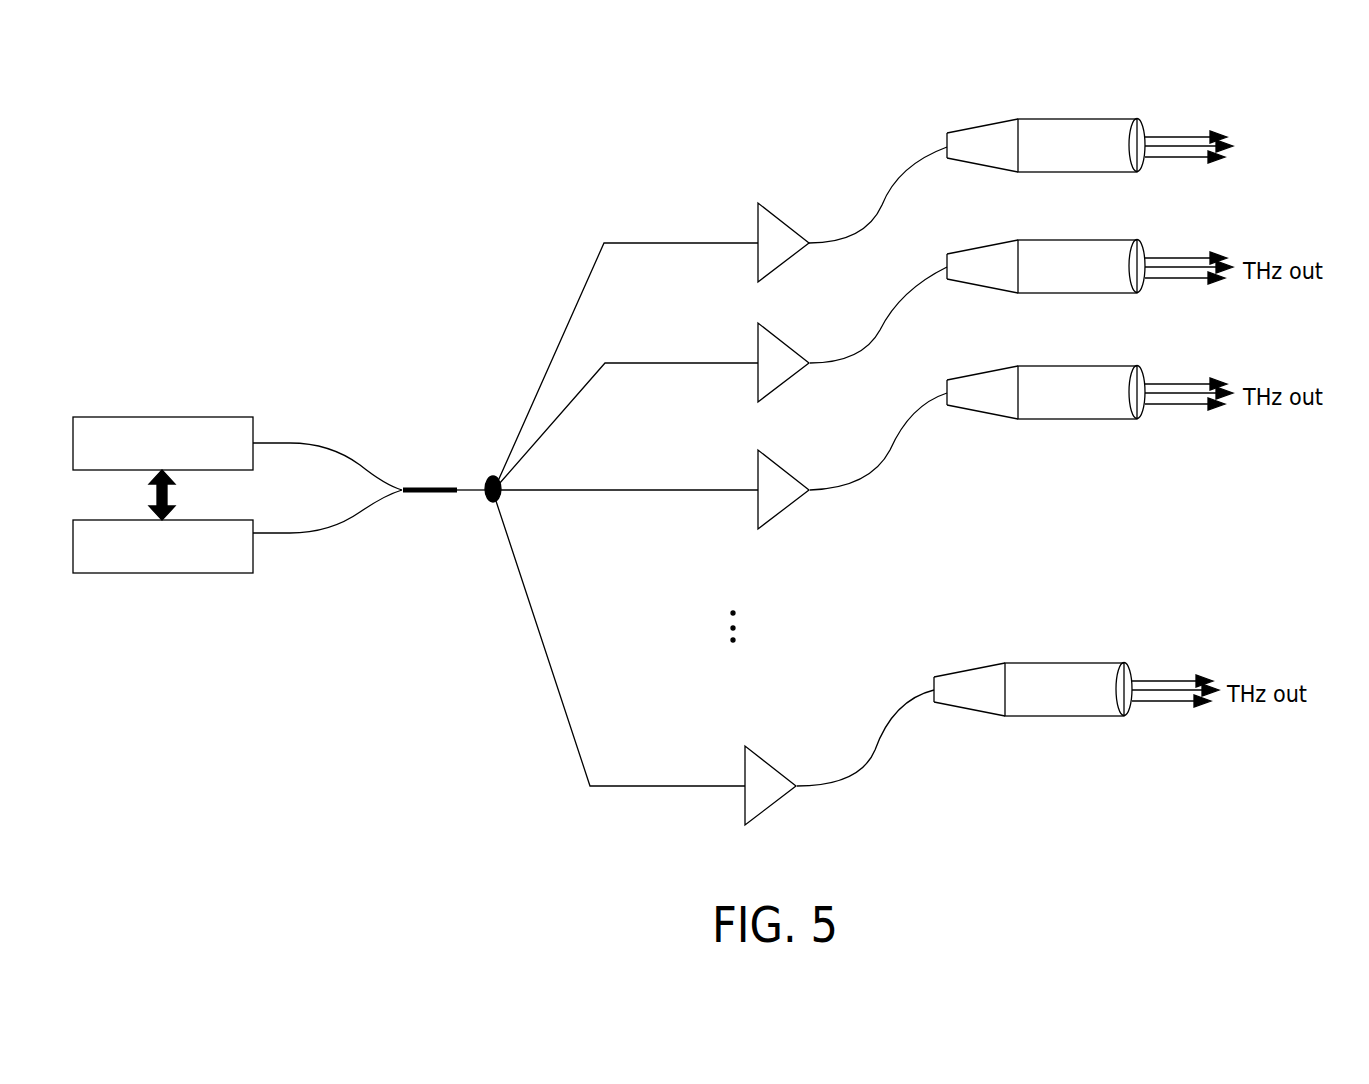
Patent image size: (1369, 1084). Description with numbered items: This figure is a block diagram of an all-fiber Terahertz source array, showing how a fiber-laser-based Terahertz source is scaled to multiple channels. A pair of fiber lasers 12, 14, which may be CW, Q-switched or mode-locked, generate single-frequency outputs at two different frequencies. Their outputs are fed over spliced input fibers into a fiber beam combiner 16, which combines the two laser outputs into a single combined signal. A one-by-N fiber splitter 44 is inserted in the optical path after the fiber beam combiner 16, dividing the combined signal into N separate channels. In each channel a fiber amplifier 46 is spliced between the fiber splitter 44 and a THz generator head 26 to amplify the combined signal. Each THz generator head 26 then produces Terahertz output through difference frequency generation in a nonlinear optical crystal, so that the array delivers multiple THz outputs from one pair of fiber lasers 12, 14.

The fiber laser 12 is at (148, 420).
The fiber laser 14 is at (175, 573).
The fiber beam combiner 16 is at (421, 514).
The 1×N fiber splitter 44 is at (490, 452).
The fiber amplifier 46 is at (767, 186).
The THz generator head 26 is at (1100, 112).